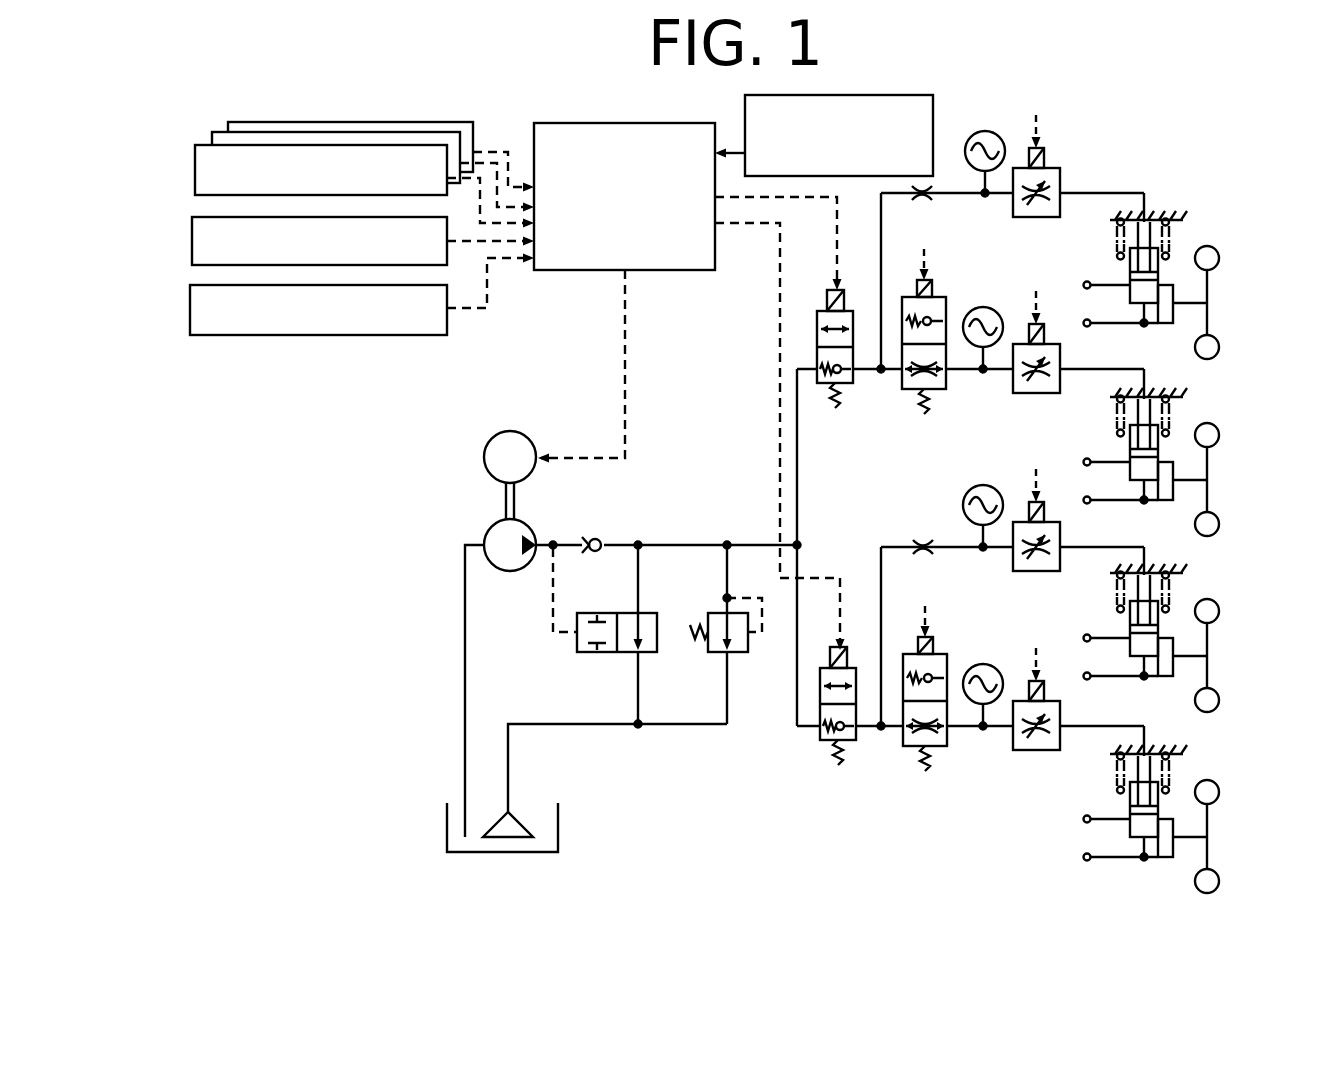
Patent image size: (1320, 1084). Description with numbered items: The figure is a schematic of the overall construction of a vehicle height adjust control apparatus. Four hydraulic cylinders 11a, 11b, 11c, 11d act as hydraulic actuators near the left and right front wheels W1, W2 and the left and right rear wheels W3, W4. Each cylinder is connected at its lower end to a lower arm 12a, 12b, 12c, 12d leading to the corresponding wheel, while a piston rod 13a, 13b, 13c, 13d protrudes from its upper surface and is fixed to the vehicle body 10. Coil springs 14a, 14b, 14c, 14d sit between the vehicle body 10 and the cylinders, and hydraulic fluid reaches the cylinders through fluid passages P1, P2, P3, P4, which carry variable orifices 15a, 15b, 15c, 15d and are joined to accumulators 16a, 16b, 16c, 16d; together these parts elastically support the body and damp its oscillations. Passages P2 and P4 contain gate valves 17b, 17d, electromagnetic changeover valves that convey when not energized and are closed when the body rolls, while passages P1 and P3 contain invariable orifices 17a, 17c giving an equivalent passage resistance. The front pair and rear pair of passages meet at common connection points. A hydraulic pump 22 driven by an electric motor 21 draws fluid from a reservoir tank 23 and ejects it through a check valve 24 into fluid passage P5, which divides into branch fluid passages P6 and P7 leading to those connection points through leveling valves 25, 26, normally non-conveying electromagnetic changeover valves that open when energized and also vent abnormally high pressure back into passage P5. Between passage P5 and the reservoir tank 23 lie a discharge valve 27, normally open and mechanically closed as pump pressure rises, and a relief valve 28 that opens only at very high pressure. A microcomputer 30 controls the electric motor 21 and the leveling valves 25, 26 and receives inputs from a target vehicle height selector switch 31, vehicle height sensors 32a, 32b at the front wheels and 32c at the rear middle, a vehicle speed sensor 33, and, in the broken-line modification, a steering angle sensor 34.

The vehicle body 10 is at (1115, 754).
The hydraulic cylinder 11a is at (1130, 277).
The hydraulic cylinder 11b is at (1130, 454).
The hydraulic cylinder 11c is at (1130, 630).
The hydraulic cylinder 11d is at (1130, 811).
The lower arm 12a is at (1120, 322).
The lower arm 12b is at (1120, 499).
The lower arm 12c is at (1120, 675).
The lower arm 12d is at (1110, 856).
The piston rod 13a is at (1152, 240).
The piston rod 13b is at (1152, 417).
The piston rod 13c is at (1152, 593).
The piston rod 13d is at (1152, 774).
The coil spring 14a is at (1168, 255).
The coil spring 14b is at (1168, 432).
The coil spring 14c is at (1168, 608).
The coil spring 14d is at (1168, 789).
The variable orifice 15a is at (1060, 175).
The variable orifice 15b is at (1060, 351).
The variable orifice 15c is at (1060, 529).
The variable orifice 15d is at (1060, 708).
The accumulator 16a is at (1003, 124).
The accumulator 16b is at (1000, 296).
The accumulator 16c is at (977, 488).
The accumulator 16d is at (992, 668).
The invariable orifice 17a is at (922, 203).
The gate valve 17b is at (906, 296).
The invariable orifice 17c is at (923, 538).
The gate valve 17d is at (948, 656).
The electric motor 21 is at (488, 444).
The hydraulic pump 22 is at (486, 532).
The reservoir tank 23 is at (558, 825).
The check valve 24 is at (593, 553).
The leveling valve 25 is at (817, 333).
The leveling valve 26 is at (857, 690).
The discharge valve 27 is at (657, 632).
The relief valve 28 is at (738, 652).
The microcomputer 30 is at (617, 123).
The target vehicle height selector switch 31 is at (860, 177).
The vehicle height sensor 32a is at (240, 145).
The vehicle height sensor 32b is at (333, 132).
The vehicle height sensor 32c is at (440, 122).
The vehicle speed sensor 33 is at (192, 242).
The steering angle sensor 34 is at (192, 310).
The fluid passage P1 is at (1012, 218).
The fluid passage P2 is at (983, 372).
The fluid passage P3 is at (958, 550).
The fluid passage P4 is at (983, 729).
The fluid passage P5 is at (690, 548).
The branch fluid passage P6 is at (881, 372).
The branch fluid passage P7 is at (881, 729).
The left front wheel W1 is at (1216, 340).
The right front wheel W2 is at (1216, 517).
The left rear wheel W3 is at (1216, 693).
The right rear wheel W4 is at (1216, 874).